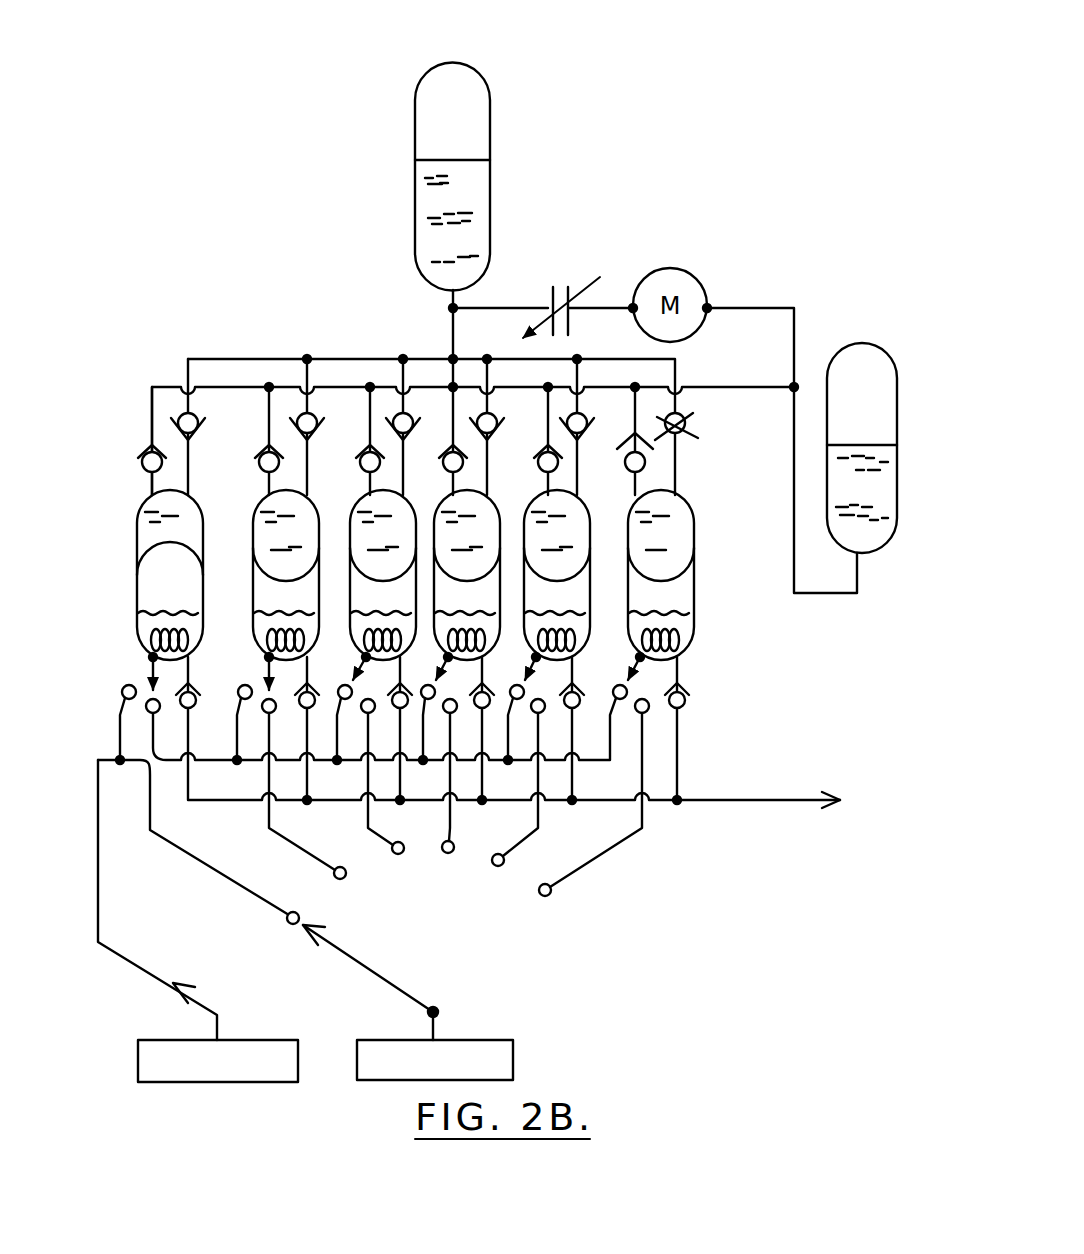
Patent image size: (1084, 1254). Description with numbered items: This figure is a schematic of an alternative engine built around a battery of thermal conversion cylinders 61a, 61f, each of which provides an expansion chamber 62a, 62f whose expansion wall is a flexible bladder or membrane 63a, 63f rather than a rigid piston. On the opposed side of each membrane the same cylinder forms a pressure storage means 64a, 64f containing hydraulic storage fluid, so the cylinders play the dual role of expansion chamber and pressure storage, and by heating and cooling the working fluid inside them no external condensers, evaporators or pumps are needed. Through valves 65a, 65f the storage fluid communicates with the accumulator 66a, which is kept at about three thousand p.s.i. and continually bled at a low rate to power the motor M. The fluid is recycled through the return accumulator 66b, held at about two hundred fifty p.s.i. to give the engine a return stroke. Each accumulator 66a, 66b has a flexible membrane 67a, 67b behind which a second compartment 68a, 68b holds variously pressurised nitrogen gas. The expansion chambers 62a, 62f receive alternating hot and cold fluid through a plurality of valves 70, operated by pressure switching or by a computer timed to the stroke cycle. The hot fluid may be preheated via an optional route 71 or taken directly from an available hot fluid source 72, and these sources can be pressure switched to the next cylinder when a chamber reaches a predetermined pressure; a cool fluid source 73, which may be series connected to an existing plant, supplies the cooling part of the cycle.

The thermal conversion cylinder 61a is at (146, 633).
The expansion chamber 62a is at (172, 555).
The flexible bladder or membrane 63a is at (173, 557).
The pressure storage means 64a is at (174, 502).
The valve 65a is at (174, 410).
The thermal conversion cylinder 61f is at (697, 642).
The expansion chamber 62f is at (663, 590).
The flexible bladder or membrane 63f is at (658, 576).
The pressure storage means 64f is at (663, 495).
The valve 65f is at (688, 433).
The accumulator 66a is at (490, 217).
The flexible membrane 67a is at (466, 161).
The second compartment 68a is at (486, 150).
The return accumulator 66b is at (878, 533).
The flexible membrane 67b is at (840, 447).
The second compartment 68b is at (821, 445).
The valves 70 is at (709, 722).
The optional preheating route 71 is at (287, 843).
The direct hot fluid source 72 is at (237, 887).
The cool fluid source 73 is at (142, 967).